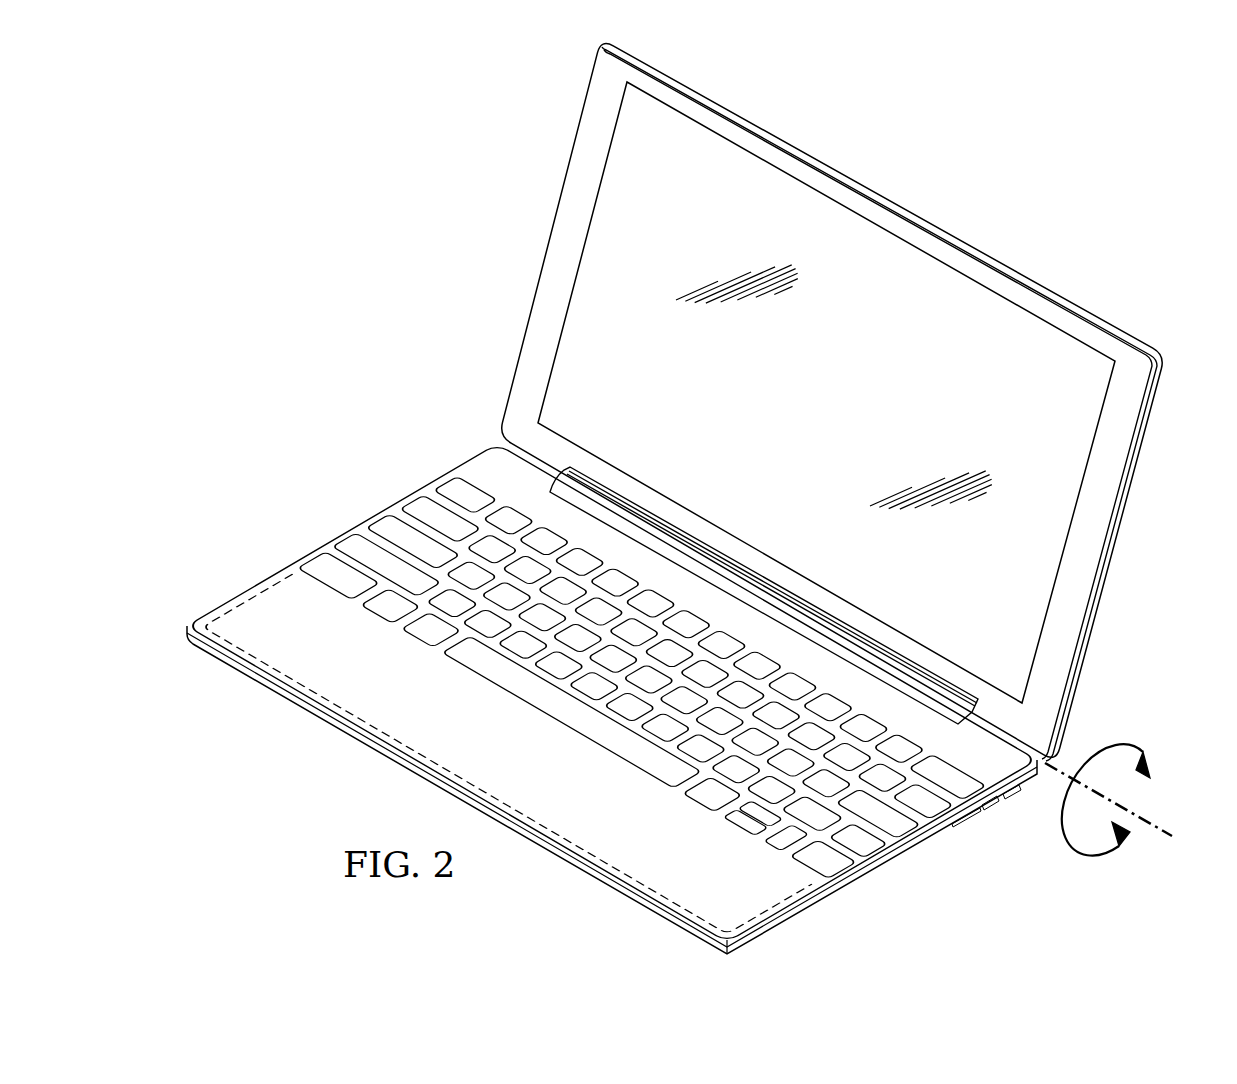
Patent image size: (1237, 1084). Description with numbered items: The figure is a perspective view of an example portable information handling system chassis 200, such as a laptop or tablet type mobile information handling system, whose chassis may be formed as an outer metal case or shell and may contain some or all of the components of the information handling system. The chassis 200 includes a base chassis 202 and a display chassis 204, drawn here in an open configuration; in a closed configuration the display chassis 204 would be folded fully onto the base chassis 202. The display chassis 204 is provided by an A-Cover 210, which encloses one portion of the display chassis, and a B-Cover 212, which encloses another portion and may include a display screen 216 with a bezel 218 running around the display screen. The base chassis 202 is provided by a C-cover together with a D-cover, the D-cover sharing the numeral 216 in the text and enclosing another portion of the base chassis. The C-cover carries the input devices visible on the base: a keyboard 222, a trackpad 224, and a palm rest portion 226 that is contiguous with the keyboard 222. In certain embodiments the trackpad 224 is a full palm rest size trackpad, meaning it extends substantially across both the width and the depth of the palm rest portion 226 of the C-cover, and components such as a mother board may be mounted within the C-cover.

The portable information handling system chassis 200 is at (1094, 193).
The base chassis 202 is at (862, 899).
The display chassis 204 is at (1137, 571).
The A-Cover 210 is at (1131, 489).
The B-Cover 212 is at (1088, 331).
The display screen 216 is at (908, 275).
The bezel 218 is at (750, 134).
The keyboard 222 is at (413, 501).
The trackpad 224 is at (612, 693).
The palm rest portion 226 is at (510, 754).